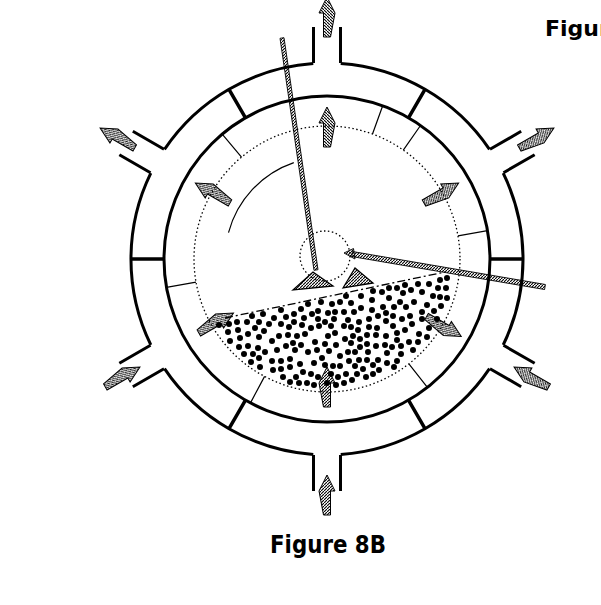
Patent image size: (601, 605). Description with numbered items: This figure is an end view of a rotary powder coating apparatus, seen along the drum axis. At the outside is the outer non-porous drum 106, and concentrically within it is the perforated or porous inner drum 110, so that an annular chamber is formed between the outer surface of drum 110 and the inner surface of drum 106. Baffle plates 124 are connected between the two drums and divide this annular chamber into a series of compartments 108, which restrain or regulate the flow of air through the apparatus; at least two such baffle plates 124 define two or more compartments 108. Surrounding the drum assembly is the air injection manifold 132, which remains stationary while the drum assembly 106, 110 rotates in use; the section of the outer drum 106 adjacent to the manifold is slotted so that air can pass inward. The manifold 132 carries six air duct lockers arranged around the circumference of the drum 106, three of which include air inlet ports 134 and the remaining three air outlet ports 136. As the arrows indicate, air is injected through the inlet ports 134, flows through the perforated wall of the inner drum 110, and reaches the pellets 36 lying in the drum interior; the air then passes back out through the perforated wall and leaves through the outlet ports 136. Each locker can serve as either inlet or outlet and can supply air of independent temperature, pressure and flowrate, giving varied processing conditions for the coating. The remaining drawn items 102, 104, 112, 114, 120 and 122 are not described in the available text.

The pellets 36 is at (290, 303).
The reactor vessel 102 is at (378, 437).
The outer wall 104 is at (203, 390).
The outer non-porous drum 106 is at (165, 183).
The compartments 108 is at (430, 122).
The perforated inner drum 110 is at (197, 295).
The shaft 112 is at (280, 52).
The feed tube 114 is at (545, 282).
The hub 120 is at (341, 226).
The particle bed 122 is at (420, 375).
The baffle plates 124 is at (470, 228).
The air injection manifold 132 is at (102, 271).
The air inlet ports 134 is at (131, 356).
The air outlet ports 136 is at (148, 140).